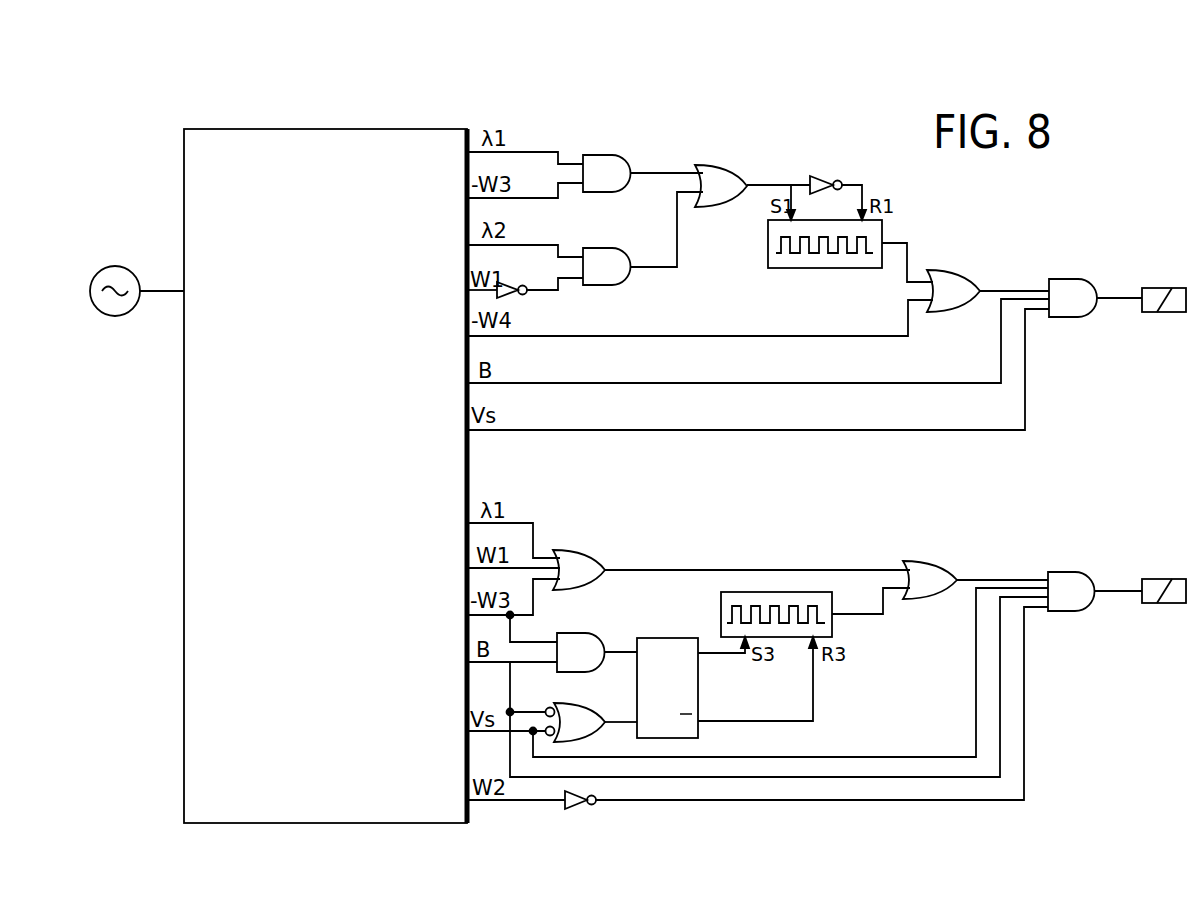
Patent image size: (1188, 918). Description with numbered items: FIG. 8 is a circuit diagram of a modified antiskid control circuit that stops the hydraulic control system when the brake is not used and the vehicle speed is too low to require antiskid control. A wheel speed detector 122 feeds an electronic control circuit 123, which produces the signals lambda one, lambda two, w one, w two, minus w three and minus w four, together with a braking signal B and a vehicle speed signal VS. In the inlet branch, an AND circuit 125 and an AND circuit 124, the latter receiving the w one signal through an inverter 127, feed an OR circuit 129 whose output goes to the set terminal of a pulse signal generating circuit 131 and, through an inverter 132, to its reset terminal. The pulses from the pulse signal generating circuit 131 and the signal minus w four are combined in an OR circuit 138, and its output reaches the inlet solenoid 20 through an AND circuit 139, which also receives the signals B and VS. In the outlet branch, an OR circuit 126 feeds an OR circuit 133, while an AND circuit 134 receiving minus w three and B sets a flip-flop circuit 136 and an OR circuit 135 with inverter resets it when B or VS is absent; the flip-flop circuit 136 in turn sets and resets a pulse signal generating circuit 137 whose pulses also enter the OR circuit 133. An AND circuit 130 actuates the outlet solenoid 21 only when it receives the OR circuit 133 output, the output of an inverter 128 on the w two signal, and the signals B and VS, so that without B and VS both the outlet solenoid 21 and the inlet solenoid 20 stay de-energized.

The inlet solenoid 20 is at (1160, 289).
The outlet solenoid 21 is at (1160, 581).
The wheel speed detector 122 is at (115, 268).
The electronic control circuit 123 is at (329, 128).
The AND circuit 124 is at (605, 252).
The AND circuit 125 is at (605, 157).
The OR circuit 126 is at (574, 552).
The inverter 127 is at (510, 286).
The inverter 128 is at (575, 810).
The OR circuit 129 is at (716, 170).
The AND circuit 130 is at (1068, 576).
The pulse signal generating circuit 131 is at (815, 263).
The inverter 132 is at (820, 177).
The OR circuit 133 is at (926, 562).
The AND circuit 134 is at (580, 635).
The OR circuit with inverter 135 is at (582, 708).
The flip-flop circuit 136 is at (668, 639).
The pulse signal generating circuit 137 is at (833, 631).
The OR circuit 138 is at (950, 275).
The AND circuit 139 is at (1068, 283).